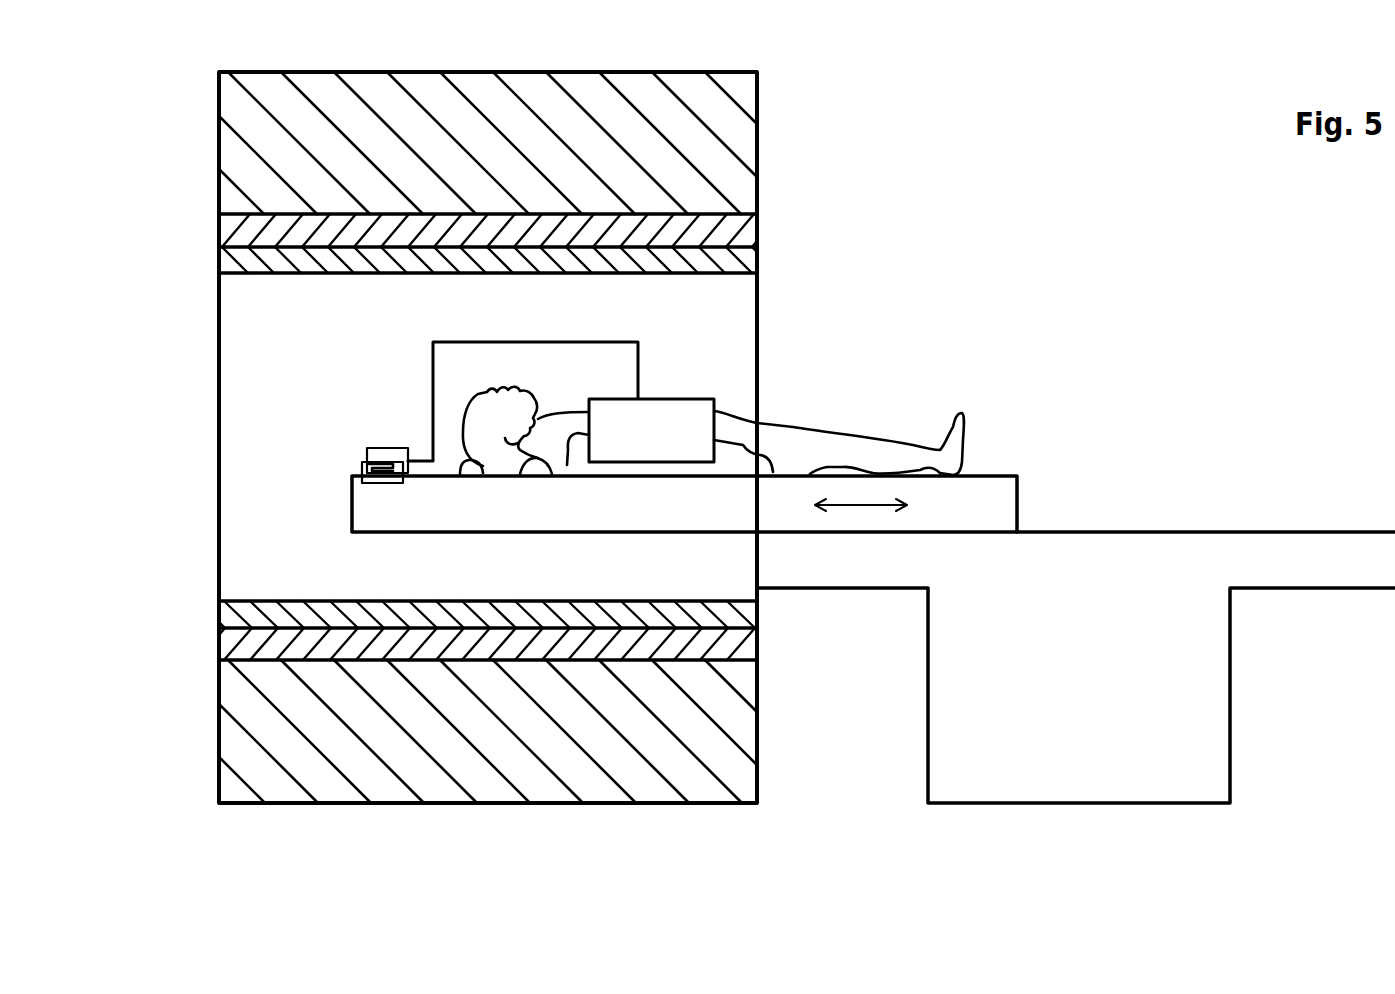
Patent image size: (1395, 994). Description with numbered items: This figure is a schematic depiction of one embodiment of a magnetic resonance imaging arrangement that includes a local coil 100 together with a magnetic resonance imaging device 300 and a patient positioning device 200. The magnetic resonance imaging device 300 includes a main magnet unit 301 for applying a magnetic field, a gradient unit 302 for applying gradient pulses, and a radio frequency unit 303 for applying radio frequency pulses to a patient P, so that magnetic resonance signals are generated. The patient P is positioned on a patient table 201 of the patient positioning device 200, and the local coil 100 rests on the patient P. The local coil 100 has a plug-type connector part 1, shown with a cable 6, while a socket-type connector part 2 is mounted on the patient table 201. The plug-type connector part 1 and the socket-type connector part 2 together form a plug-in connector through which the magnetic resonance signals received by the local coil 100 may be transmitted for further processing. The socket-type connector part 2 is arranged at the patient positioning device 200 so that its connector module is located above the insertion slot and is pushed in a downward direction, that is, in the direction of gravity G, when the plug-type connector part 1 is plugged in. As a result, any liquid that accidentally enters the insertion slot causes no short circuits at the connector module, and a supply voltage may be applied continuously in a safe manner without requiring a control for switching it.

The magnetic resonance imaging device 300 is at (918, 190).
The main magnet unit 301 is at (247, 152).
The gradient unit 302 is at (745, 237).
The radio frequency unit 303 is at (247, 263).
The cable 6 is at (456, 341).
The plug-type connector part 1 is at (385, 455).
The socket-type connector part 2 is at (375, 480).
The local coil 100 is at (668, 412).
The patient P is at (815, 453).
The patient table 201 is at (996, 484).
The patient positioning device 200 is at (1275, 662).
The direction of gravity G is at (41, 695).